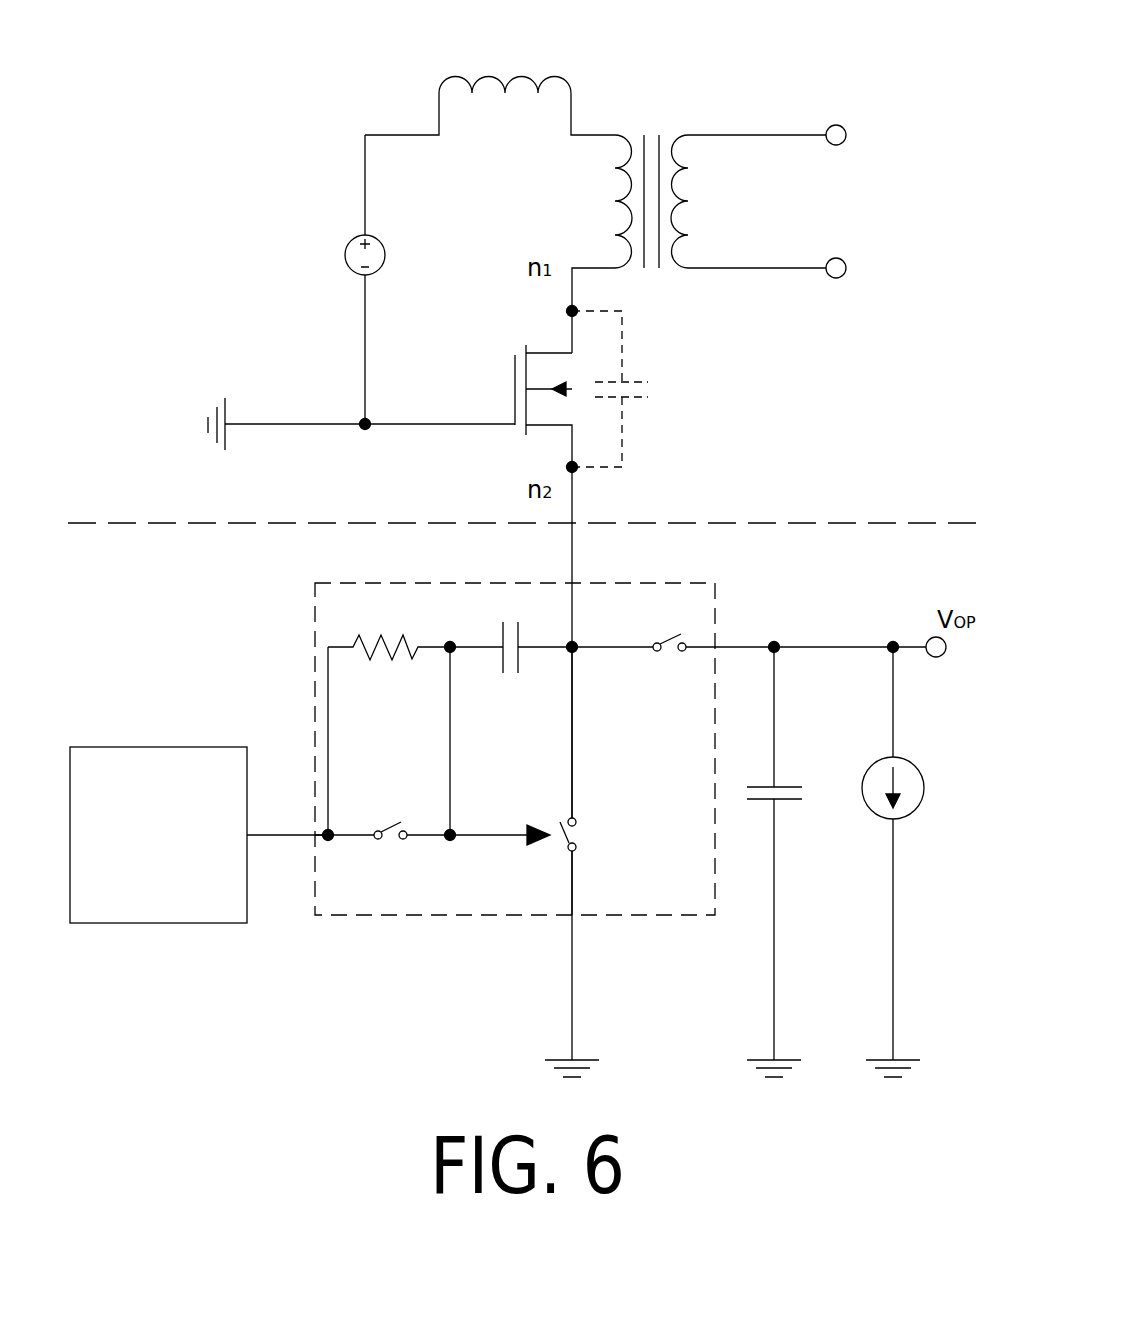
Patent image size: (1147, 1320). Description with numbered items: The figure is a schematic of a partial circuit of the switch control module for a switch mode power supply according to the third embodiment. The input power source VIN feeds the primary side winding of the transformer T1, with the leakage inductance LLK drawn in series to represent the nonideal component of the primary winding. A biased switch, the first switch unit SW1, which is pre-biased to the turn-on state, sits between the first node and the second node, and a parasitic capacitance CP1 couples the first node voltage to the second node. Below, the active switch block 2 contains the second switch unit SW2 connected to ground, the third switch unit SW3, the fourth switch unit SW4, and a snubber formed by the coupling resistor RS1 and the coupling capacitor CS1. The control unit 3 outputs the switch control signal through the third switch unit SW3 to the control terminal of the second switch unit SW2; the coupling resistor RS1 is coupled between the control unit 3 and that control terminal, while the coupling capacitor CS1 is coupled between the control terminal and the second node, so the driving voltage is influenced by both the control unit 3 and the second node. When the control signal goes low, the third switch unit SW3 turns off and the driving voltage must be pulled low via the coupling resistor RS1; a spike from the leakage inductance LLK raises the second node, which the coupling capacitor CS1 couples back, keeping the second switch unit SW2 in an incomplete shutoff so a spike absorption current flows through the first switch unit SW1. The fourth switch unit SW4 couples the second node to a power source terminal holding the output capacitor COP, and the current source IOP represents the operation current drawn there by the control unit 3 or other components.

The switch block SWB 2 is at (715, 592).
The control unit 3 is at (90, 923).
The first switch unit SW1 is at (508, 405).
The second switch unit SW2 is at (598, 781).
The third switch unit SW3 is at (382, 814).
The fourth switch unit SW4 is at (643, 627).
The transformer T1 is at (711, 219).
The parasitic capacitance CP1 is at (632, 389).
The coupling capacitor CS1 is at (511, 631).
The coupling resistor RS1 is at (389, 626).
The output capacitor COP is at (761, 853).
The current source IOP is at (908, 853).
The leakage inductance LLK is at (527, 86).
The input power source VIN is at (367, 258).